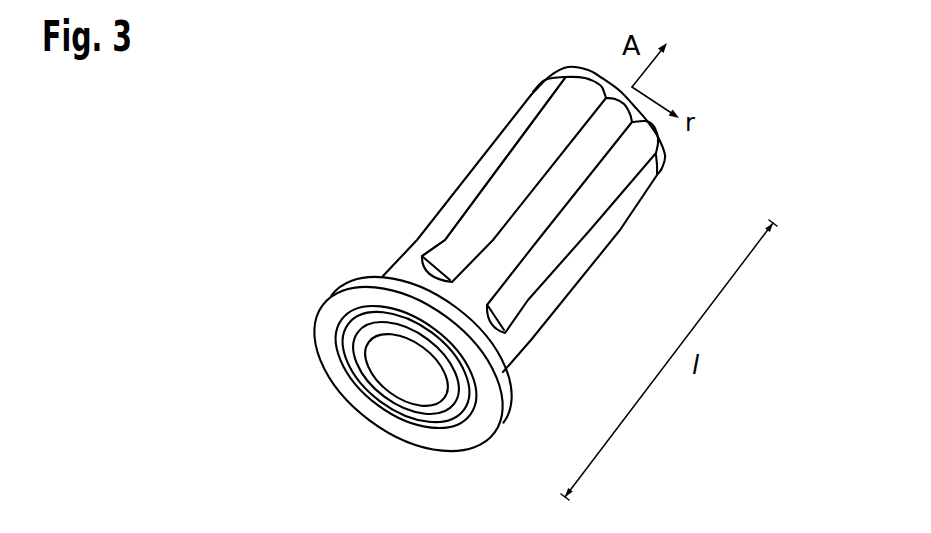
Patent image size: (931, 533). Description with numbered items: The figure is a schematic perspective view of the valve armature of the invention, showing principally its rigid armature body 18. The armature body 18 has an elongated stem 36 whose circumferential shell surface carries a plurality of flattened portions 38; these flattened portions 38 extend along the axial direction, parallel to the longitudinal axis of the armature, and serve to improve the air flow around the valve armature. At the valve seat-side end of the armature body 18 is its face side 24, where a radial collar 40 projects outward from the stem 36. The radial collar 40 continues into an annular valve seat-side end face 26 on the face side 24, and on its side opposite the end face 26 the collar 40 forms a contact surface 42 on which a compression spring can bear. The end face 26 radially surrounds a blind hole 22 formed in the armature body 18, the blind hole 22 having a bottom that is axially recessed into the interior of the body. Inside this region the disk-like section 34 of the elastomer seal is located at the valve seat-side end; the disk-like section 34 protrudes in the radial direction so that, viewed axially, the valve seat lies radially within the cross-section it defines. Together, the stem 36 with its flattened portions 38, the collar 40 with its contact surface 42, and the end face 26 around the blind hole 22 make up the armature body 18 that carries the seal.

The armature body 18 is at (300, 99).
The blind hole 22 is at (440, 418).
The face side 24 is at (328, 350).
The valve seat-side end face 26 is at (405, 367).
The disk-like section 34 is at (393, 378).
The stem 36 is at (528, 103).
The flattened portions 38 is at (494, 197).
The radial collar 40 is at (348, 288).
The contact surface 42 is at (508, 364).